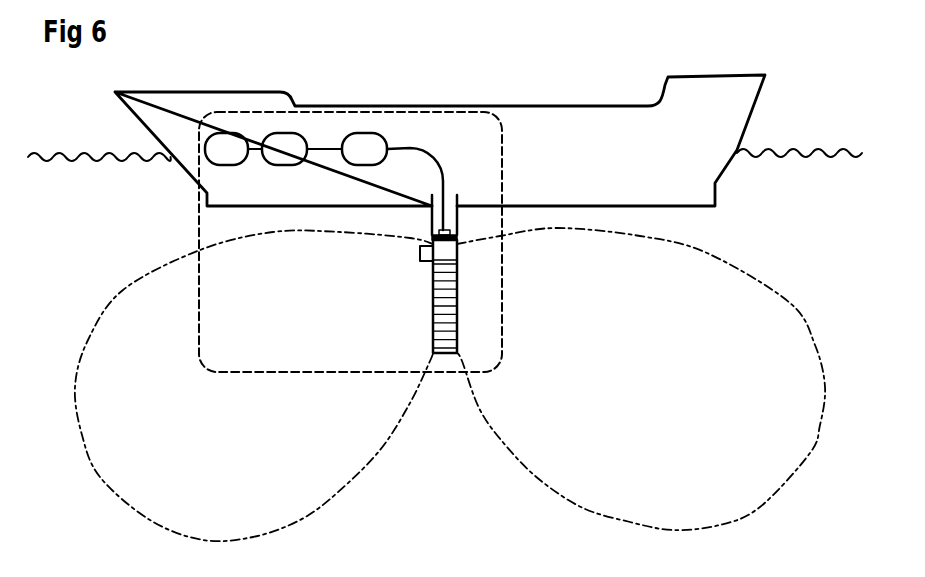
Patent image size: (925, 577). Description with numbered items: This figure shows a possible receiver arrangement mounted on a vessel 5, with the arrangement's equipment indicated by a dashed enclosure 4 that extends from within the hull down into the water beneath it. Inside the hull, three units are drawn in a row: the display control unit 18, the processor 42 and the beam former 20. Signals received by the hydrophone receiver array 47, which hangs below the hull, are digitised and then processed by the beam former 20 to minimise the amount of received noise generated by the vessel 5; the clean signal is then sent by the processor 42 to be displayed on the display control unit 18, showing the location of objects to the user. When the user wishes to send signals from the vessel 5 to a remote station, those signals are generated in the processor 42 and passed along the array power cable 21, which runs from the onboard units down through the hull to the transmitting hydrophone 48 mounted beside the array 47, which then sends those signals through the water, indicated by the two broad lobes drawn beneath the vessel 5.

The vessel 5 is at (712, 73).
The sonar system 4 is at (197, 230).
The display control unit 18 is at (226, 149).
The processor 42 is at (284, 149).
The beam former 20 is at (364, 149).
The array power cable 21 is at (423, 155).
The hydrophone receiver array 47 is at (458, 308).
The transmitting hydrophone 48 is at (420, 255).